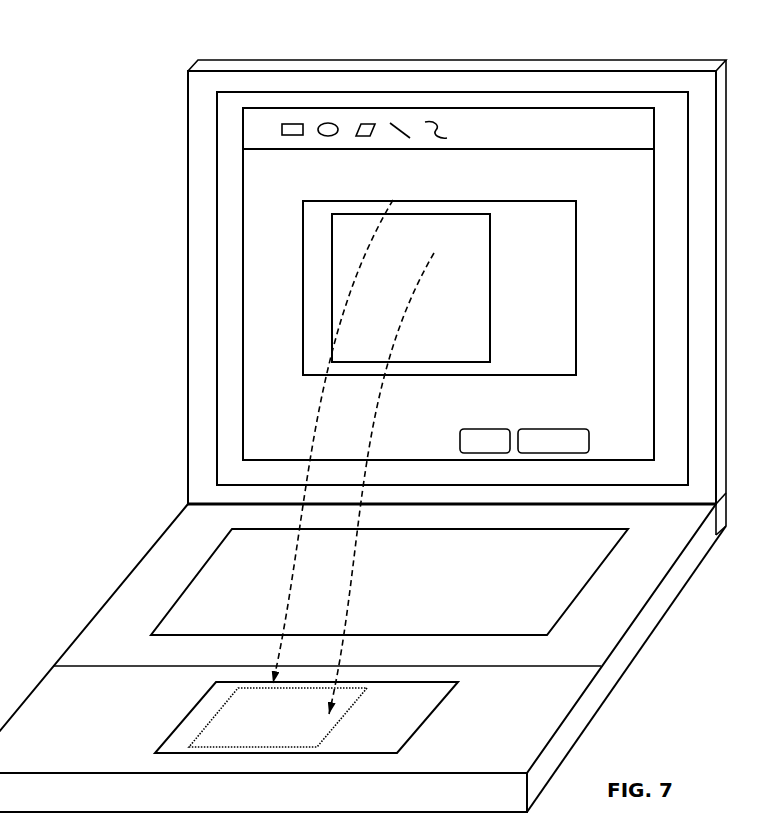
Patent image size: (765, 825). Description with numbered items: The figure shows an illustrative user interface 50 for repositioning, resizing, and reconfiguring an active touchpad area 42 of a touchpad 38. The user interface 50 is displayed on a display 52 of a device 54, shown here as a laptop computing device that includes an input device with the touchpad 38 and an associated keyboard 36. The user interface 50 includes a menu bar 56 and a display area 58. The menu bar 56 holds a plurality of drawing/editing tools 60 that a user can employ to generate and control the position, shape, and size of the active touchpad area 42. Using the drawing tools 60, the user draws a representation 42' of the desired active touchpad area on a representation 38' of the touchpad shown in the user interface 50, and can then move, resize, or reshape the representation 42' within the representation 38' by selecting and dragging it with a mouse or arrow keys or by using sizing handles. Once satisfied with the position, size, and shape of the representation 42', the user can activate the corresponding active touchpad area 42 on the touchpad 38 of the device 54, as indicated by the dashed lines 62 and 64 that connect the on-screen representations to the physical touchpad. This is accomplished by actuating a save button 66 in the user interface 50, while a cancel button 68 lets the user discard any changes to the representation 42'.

The device 54 is at (108, 478).
The display 52 is at (217, 122).
The user interface 50 is at (242, 193).
The menu bar 56 is at (646, 136).
The drawing/editing tools 60 is at (355, 120).
The display area 58 is at (638, 320).
The representation of a touchpad 38' is at (468, 284).
The representation of the active touchpad area 42' is at (439, 288).
The dashed line 64 is at (313, 440).
The dashed line 62 is at (370, 440).
The save button 66 is at (460, 432).
The cancel button 68 is at (589, 440).
The keyboard 36 is at (232, 577).
The touchpad 38 is at (314, 717).
The active touchpad area 42 is at (295, 717).